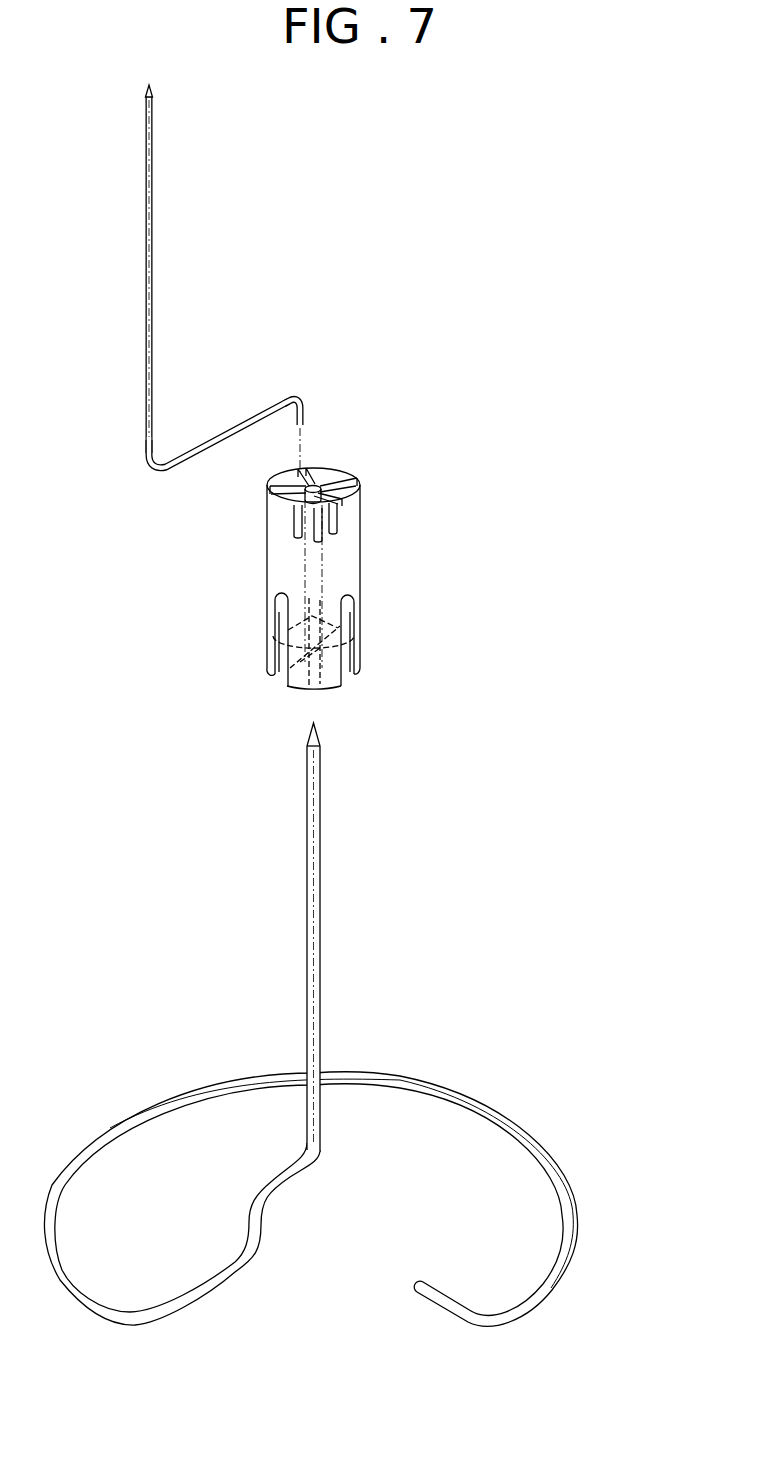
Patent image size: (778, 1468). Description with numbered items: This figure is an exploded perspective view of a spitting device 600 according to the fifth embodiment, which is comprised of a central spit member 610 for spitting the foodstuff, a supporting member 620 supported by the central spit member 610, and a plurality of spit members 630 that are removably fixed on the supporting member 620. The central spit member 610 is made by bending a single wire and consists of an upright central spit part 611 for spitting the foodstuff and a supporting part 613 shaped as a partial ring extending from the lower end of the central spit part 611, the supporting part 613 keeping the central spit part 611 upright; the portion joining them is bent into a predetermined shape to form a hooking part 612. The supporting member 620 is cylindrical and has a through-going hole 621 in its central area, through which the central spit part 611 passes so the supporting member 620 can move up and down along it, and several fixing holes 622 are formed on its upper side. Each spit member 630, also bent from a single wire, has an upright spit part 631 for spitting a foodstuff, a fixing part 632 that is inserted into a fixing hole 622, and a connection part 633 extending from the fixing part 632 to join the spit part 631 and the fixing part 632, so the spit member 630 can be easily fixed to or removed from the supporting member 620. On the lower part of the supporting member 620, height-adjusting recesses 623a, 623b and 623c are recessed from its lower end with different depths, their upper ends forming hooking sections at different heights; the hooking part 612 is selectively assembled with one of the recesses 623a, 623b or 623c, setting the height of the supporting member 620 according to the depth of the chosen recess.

The spitting device 600 is at (534, 316).
The central spit member 610 is at (504, 1010).
The central spit part 611 is at (306, 810).
The hooking part 612 is at (280, 1193).
The supporting part 613 is at (572, 1182).
The supporting member 620 is at (382, 567).
The through-going hole 621 is at (332, 472).
The fixing holes 622 is at (355, 497).
The height-adjusting recess 623a is at (277, 614).
The height-adjusting recess 623b is at (357, 614).
The height-adjusting recess 623c is at (350, 648).
The spit member 630 is at (198, 238).
The spit part 631 is at (145, 165).
The fixing part 632 is at (302, 410).
The connection part 633 is at (203, 445).